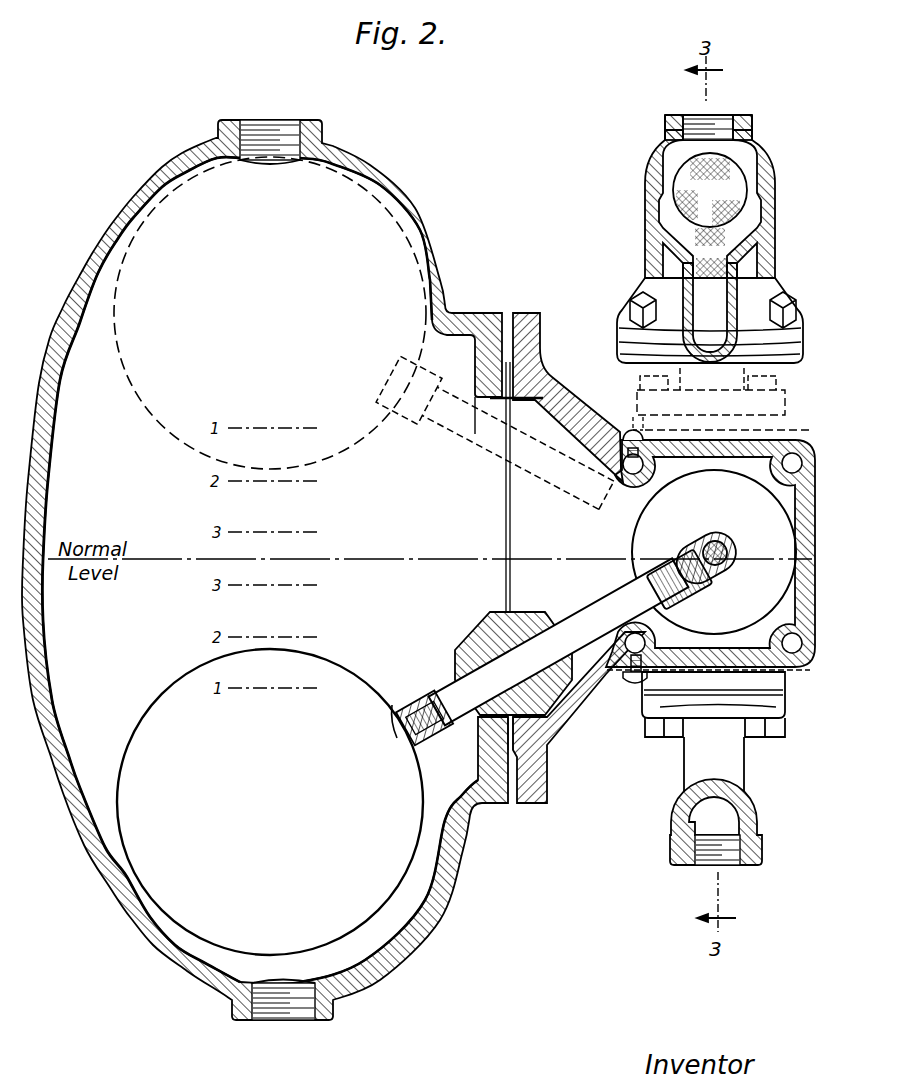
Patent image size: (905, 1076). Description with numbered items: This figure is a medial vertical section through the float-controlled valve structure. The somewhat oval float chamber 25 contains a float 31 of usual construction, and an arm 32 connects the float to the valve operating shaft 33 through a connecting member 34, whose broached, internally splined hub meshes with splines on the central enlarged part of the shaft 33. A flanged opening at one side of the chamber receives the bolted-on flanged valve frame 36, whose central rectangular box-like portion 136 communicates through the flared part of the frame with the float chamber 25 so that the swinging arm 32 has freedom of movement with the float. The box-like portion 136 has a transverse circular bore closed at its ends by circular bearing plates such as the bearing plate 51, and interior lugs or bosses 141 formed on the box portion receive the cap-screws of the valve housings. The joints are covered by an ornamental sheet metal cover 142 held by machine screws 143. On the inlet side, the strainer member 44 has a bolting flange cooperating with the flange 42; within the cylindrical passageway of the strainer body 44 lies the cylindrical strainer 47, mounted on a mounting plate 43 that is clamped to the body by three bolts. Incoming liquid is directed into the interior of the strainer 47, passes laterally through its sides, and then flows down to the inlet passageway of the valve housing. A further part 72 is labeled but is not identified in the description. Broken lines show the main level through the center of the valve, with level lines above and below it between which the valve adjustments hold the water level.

The float chamber 25 is at (415, 208).
The float 31 is at (152, 410).
The arm 32 is at (572, 625).
The valve operating shaft 33 is at (727, 549).
The connecting member 34 is at (700, 585).
The flanged valve frame 36 is at (538, 385).
The flange 42 is at (637, 423).
The mounting plate 43 is at (650, 365).
The strainer member 44 is at (660, 262).
The cylindrical strainer 47 is at (688, 230).
The bearing plate 51 is at (662, 512).
The outlet fitting 72 is at (695, 760).
The box-like portion 136 is at (802, 440).
The interior lugs or bosses 141 is at (650, 478).
The ornamental sheet metal cover 142 is at (708, 440).
The machine screws 143 is at (618, 440).